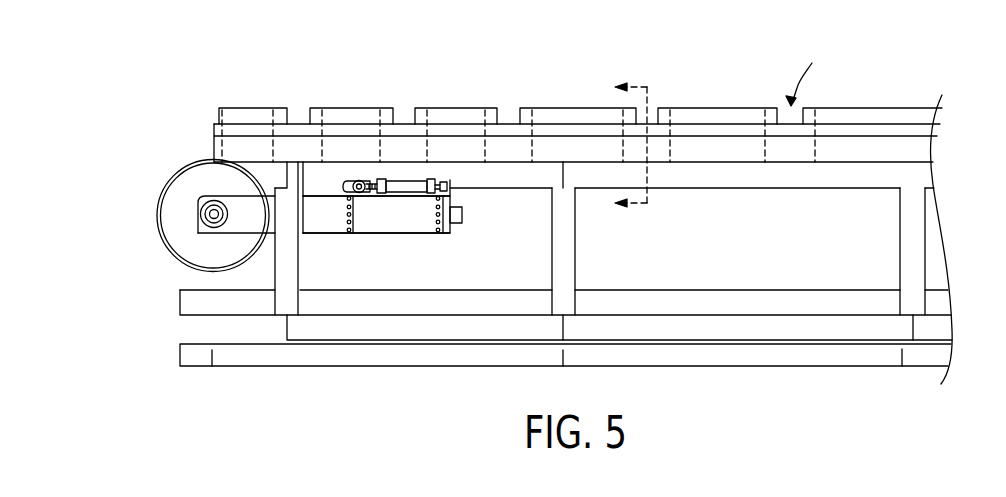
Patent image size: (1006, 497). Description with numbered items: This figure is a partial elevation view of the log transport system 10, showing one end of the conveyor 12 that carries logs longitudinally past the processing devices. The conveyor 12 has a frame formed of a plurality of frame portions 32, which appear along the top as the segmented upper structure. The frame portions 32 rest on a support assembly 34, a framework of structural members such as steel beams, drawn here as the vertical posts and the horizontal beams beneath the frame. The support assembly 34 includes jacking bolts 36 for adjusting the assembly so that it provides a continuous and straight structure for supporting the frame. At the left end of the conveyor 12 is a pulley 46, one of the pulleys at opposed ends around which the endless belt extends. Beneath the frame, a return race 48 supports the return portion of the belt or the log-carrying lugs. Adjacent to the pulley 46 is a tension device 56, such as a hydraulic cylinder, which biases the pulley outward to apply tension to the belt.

The log transport system 10 is at (180, 258).
The conveyor 12 is at (705, 111).
The frame portions 32 is at (920, 150).
The support assembly 34 is at (903, 175).
The jacking bolts 36 is at (208, 355).
The pulley 46 is at (197, 178).
The return race 48 is at (375, 318).
The tension device 56 is at (397, 178).